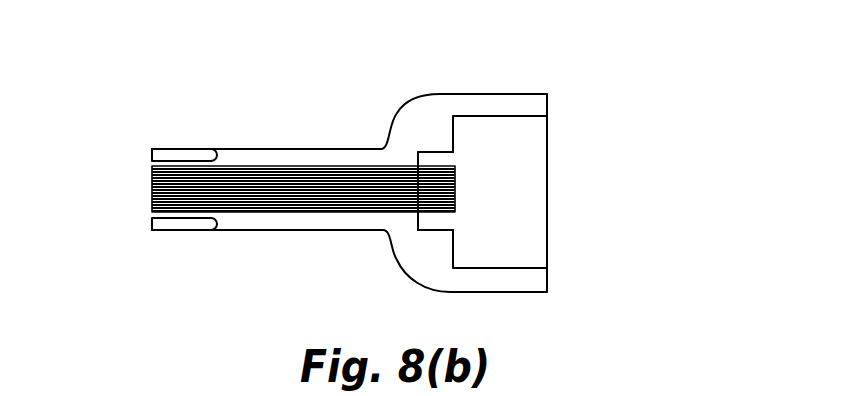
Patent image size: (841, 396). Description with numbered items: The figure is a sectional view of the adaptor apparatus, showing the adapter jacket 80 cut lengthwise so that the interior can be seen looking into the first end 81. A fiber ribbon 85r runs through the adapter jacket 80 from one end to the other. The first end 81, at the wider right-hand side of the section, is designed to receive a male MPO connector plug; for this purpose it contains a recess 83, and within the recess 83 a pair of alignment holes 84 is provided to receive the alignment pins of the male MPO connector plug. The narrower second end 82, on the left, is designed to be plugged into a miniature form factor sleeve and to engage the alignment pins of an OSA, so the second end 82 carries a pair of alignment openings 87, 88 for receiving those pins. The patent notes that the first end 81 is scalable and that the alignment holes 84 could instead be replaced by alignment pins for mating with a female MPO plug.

The adapter jacket 80 is at (356, 199).
The first end 81 is at (477, 293).
The second end 82 is at (186, 149).
The recess 83 is at (532, 249).
The alignment holes 84 is at (440, 160).
The fiber ribbon 85r is at (277, 166).
The alignment opening 87 is at (153, 162).
The alignment opening 88 is at (151, 218).